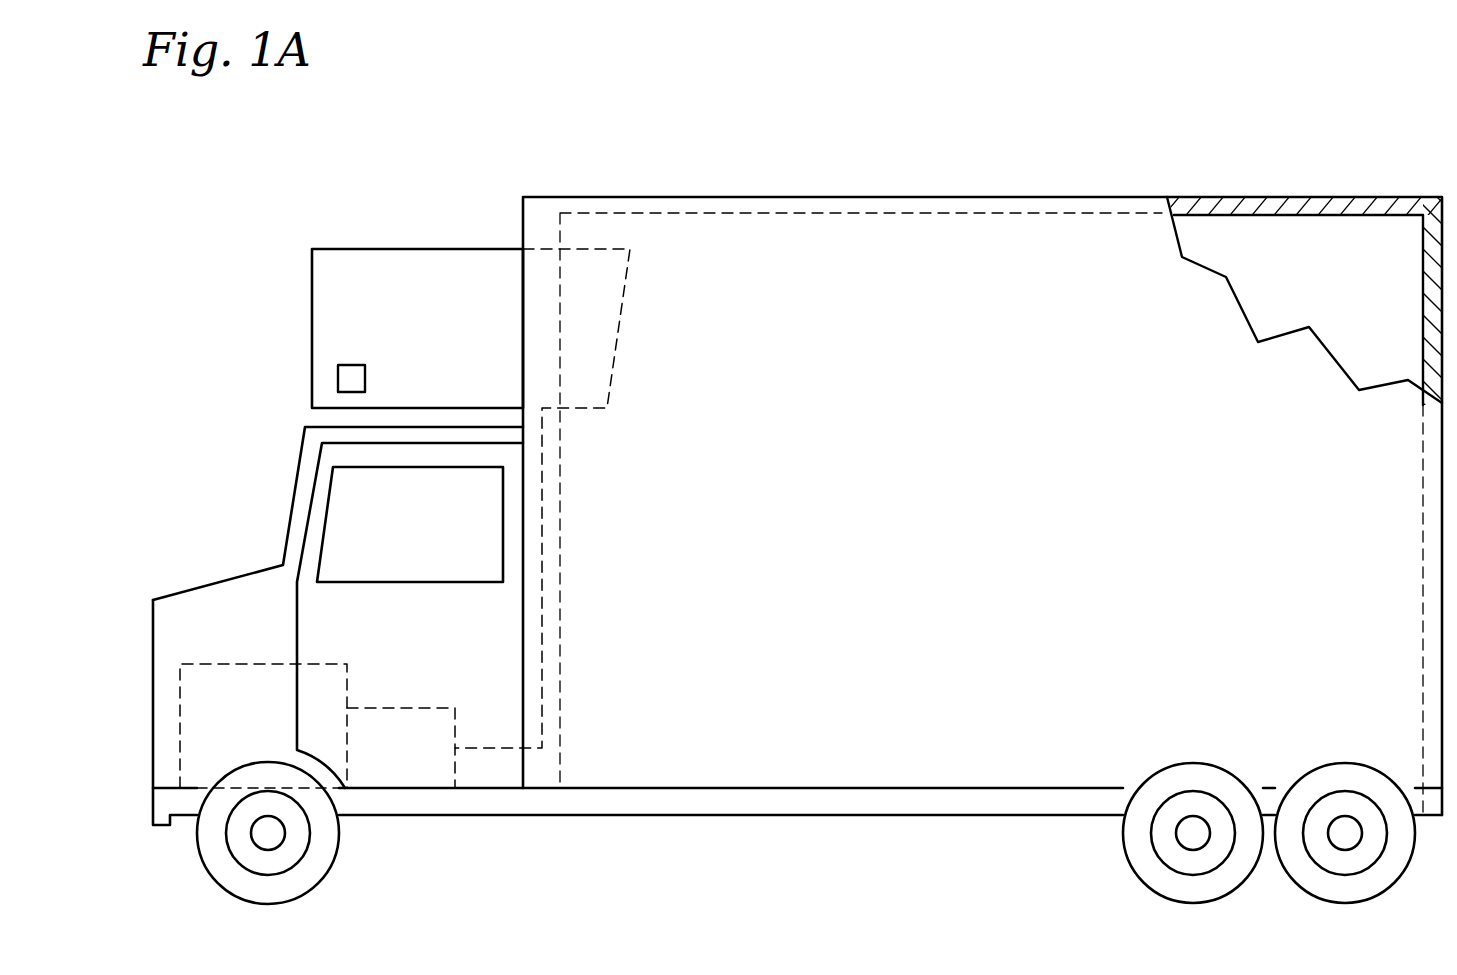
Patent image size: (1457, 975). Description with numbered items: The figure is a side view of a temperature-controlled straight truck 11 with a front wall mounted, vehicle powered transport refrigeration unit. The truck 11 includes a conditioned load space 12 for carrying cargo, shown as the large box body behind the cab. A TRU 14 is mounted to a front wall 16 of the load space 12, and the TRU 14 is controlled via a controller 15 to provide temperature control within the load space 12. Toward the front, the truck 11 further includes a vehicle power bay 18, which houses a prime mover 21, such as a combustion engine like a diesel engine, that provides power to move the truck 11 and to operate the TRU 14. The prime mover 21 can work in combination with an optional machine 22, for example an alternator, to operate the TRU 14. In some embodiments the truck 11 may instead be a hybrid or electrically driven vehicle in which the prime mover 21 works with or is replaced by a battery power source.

The temperature-controlled straight truck 11 is at (1052, 150).
The conditioned load space 12 is at (1252, 248).
The transport refrigeration unit 14 is at (392, 248).
The controller 15 is at (337, 377).
The front wall 16 is at (565, 270).
The vehicle power bay 18 is at (246, 573).
The prime mover 21 is at (208, 663).
The machine 22 is at (422, 708).